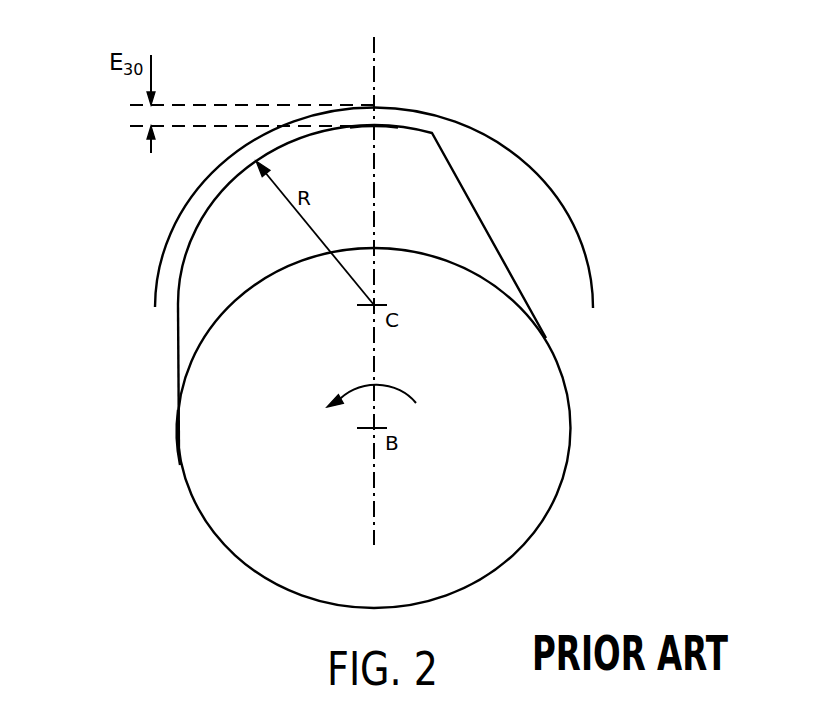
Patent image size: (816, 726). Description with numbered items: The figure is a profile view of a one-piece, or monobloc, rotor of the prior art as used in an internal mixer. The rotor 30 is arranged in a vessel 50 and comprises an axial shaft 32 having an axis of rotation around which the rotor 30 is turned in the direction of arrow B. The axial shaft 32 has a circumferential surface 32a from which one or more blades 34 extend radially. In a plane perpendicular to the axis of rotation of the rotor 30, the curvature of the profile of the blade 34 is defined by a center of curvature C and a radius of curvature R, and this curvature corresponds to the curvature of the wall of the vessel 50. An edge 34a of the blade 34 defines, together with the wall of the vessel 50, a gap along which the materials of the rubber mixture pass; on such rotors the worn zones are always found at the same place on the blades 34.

The rotor 30 is at (116, 352).
The axial shaft 32 is at (575, 460).
The circumferential surface 32a is at (180, 460).
The blade 34 is at (502, 257).
The edge 34a is at (376, 126).
The vessel 50 is at (584, 205).